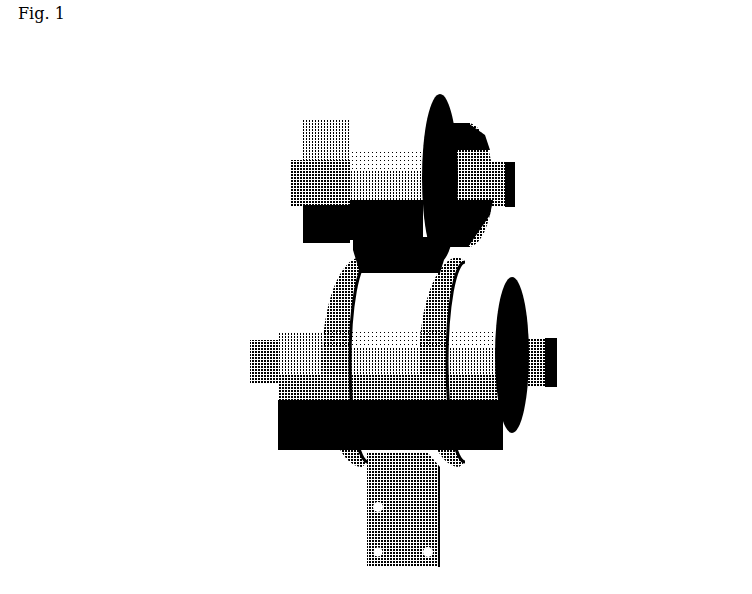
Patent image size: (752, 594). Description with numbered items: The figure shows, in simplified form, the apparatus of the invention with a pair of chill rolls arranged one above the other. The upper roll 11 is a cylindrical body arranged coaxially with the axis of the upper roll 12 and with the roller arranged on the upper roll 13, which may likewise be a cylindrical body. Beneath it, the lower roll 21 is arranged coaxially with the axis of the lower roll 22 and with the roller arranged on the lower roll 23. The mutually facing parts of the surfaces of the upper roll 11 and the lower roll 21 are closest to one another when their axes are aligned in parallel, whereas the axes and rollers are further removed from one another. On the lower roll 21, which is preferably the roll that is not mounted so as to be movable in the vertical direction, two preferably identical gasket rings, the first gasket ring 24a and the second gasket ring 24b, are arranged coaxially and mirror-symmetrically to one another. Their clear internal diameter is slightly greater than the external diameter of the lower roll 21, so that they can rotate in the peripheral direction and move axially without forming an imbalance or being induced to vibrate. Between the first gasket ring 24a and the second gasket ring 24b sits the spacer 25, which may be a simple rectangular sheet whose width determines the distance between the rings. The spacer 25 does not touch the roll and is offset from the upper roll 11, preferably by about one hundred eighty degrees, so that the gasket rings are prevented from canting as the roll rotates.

The upper roll 11 is at (398, 130).
The axis of the upper roll 12 is at (507, 174).
The roller arranged on the upper roll 13 is at (468, 138).
The lower roll 21 is at (475, 376).
The axis of the lower roll 22 is at (542, 344).
The roller arranged on the lower roll 23 is at (534, 311).
The first gasket ring 24a is at (442, 300).
The second gasket ring 24b is at (328, 358).
The spacer 25 is at (429, 509).